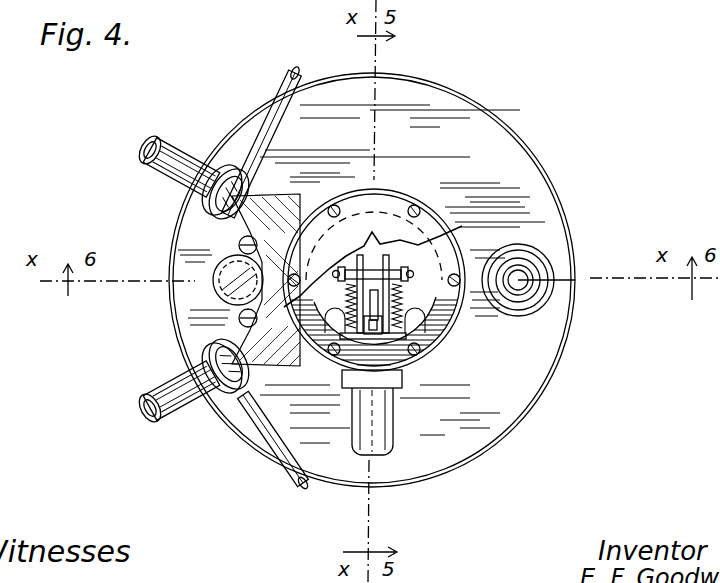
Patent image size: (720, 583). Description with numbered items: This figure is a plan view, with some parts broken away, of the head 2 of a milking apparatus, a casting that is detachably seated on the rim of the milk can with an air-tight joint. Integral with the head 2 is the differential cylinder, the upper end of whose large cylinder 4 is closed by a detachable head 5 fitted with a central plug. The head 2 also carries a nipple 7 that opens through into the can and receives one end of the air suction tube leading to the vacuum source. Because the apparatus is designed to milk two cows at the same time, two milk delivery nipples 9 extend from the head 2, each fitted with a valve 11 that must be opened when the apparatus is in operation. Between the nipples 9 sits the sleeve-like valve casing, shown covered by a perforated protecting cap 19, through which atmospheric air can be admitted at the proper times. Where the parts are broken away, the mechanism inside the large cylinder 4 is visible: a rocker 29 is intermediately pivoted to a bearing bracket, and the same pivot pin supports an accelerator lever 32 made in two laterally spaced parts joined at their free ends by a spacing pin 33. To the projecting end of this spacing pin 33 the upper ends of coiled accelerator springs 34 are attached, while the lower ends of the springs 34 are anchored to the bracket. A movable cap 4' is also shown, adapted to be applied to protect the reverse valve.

The head 2 is at (535, 208).
The large cylinder 4 is at (387, 298).
The movable cap 4' is at (395, 412).
The detachable head 5 is at (383, 200).
The nipple 7 is at (537, 270).
The milk delivery nipples 9 is at (181, 150).
The valves 11 is at (200, 205).
The perforated protecting cap 19 is at (224, 284).
The rocker 29 is at (363, 328).
The accelerator lever 32 is at (372, 256).
The spacing pin 33 is at (398, 277).
The coiled accelerator springs 34 is at (398, 308).